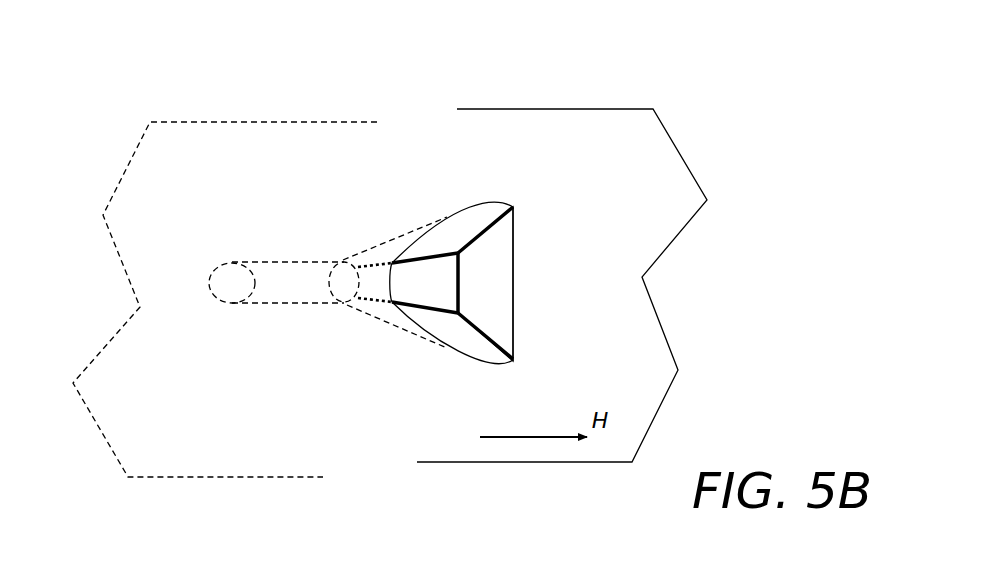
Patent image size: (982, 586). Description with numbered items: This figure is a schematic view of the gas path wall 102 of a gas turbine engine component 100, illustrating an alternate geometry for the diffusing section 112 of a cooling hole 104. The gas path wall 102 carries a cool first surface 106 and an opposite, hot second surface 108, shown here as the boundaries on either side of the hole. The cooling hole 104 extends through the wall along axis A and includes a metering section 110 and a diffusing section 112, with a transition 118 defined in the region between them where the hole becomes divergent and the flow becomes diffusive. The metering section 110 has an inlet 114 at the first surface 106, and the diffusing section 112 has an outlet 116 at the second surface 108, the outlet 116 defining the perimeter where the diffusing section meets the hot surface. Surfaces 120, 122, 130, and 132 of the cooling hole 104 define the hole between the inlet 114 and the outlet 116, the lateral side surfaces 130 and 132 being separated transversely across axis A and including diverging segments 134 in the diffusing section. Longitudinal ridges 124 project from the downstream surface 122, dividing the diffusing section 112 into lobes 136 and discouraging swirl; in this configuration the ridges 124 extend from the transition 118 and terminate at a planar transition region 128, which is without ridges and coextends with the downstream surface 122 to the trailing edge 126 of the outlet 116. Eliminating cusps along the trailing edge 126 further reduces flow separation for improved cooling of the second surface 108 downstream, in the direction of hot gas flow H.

The gas turbine engine component 100 is at (163, 78).
The gas path wall 102 is at (352, 453).
The cooling hole 104 is at (257, 390).
The first surface 106 is at (118, 183).
The second surface 108 is at (688, 162).
The metering section 110 is at (280, 293).
The diffusing section 112 is at (473, 273).
The inlet 114 is at (222, 265).
The outlet 116 is at (467, 207).
The transition 118 is at (330, 257).
The upstream surface 120 is at (395, 253).
The downstream surface 122 is at (407, 295).
The longitudinal ridges 124 is at (433, 255).
The trailing edge 126 is at (515, 243).
The transition region 128 is at (505, 280).
The lateral side surface 130 is at (273, 262).
The lateral side surface 132 is at (257, 305).
The diverging segments 134 is at (387, 323).
The lobes 136 is at (490, 213).